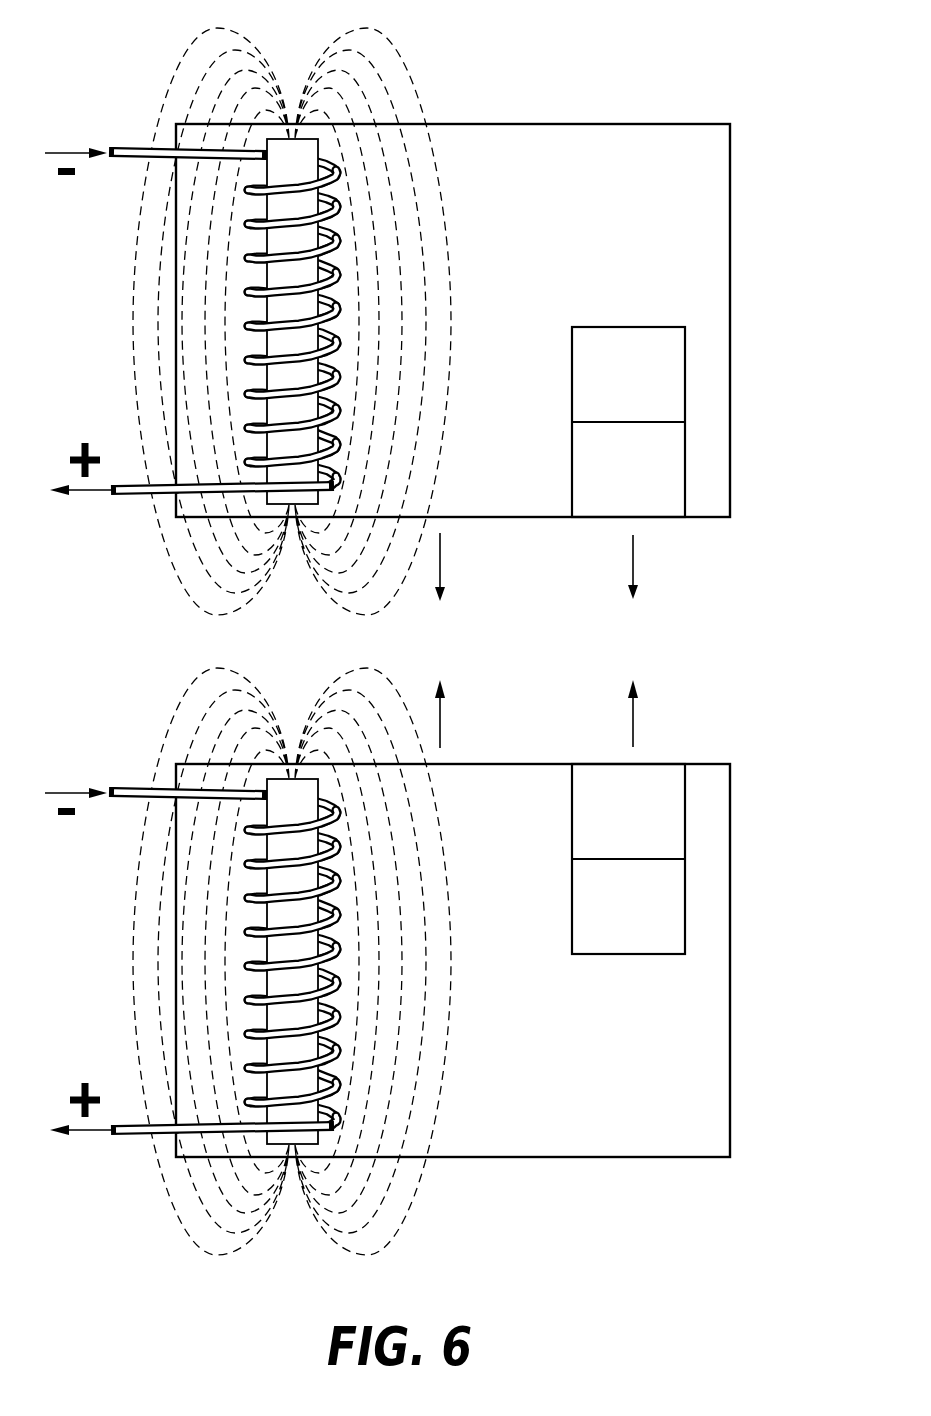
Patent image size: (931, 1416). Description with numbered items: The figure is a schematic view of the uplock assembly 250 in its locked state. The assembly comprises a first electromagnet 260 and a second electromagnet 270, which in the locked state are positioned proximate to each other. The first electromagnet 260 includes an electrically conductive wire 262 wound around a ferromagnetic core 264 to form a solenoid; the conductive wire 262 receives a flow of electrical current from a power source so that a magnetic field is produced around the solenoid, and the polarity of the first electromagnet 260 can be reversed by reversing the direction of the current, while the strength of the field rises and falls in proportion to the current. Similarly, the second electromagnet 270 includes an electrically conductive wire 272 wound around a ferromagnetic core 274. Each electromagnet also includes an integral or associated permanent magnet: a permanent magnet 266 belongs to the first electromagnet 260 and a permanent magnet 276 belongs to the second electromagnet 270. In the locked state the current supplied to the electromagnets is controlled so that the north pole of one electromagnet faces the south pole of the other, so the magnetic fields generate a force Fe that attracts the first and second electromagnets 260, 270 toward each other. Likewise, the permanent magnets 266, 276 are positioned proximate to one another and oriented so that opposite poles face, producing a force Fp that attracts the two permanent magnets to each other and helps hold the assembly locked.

The uplock assembly 250 is at (776, 46).
The first electromagnet 260 is at (665, 116).
The electrically conductive wire 262 is at (130, 497).
The ferromagnetic core 264 is at (265, 302).
The permanent magnet 266 is at (692, 398).
The second electromagnet 270 is at (453, 990).
The electrically conductive wire 272 is at (213, 1001).
The ferromagnetic core 274 is at (256, 961).
The permanent magnet 276 is at (681, 859).